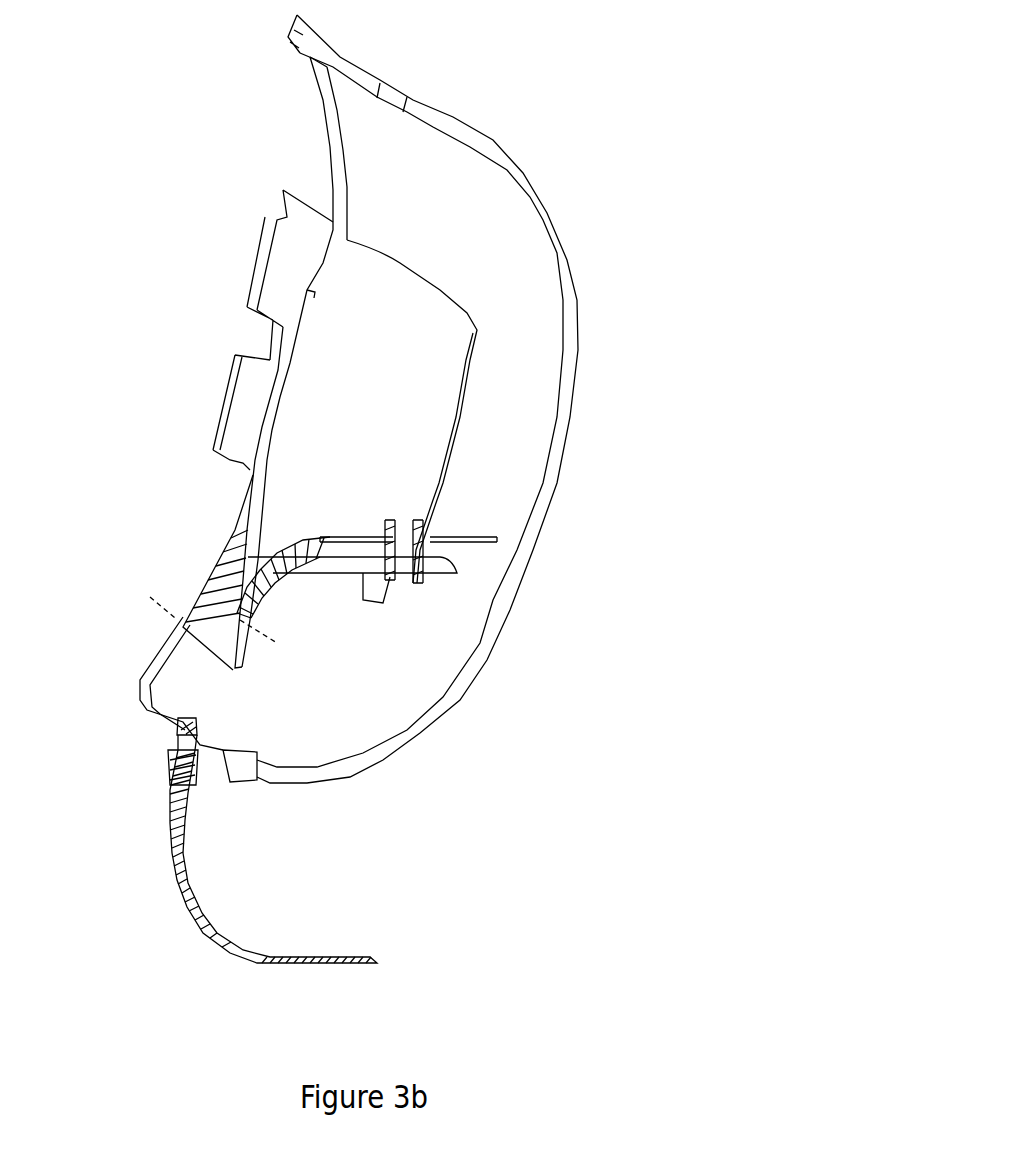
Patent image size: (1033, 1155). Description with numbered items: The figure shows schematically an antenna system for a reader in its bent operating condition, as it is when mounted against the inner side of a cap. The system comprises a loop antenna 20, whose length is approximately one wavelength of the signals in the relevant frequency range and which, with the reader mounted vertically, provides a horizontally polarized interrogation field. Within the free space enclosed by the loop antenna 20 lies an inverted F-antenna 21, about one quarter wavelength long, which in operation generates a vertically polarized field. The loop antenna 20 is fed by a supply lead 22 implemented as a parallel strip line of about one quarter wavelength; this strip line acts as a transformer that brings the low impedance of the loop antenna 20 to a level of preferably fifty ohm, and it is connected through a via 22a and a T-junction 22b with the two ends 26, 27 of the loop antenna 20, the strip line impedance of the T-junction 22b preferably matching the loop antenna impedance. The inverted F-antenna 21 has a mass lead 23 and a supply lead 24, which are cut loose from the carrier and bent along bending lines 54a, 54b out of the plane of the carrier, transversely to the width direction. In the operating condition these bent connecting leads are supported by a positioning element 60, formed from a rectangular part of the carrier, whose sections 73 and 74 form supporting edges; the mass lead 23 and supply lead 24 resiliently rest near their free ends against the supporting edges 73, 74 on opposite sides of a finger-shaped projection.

The loop antenna 20 is at (547, 222).
The inverted F-antenna 21 is at (287, 225).
The supply lead 22 is at (372, 953).
The via 22a is at (178, 728).
The T-junction 22b is at (170, 781).
The mass lead 23 is at (455, 571).
The supply lead 24 is at (494, 533).
The end of the loop antenna 26 is at (167, 717).
The end of the loop antenna 27 is at (217, 753).
The bending line 54a is at (158, 590).
The bending line 54b is at (263, 630).
The positioning element 60 is at (385, 302).
The supporting edge 73 is at (325, 553).
The supporting edge 74 is at (410, 547).